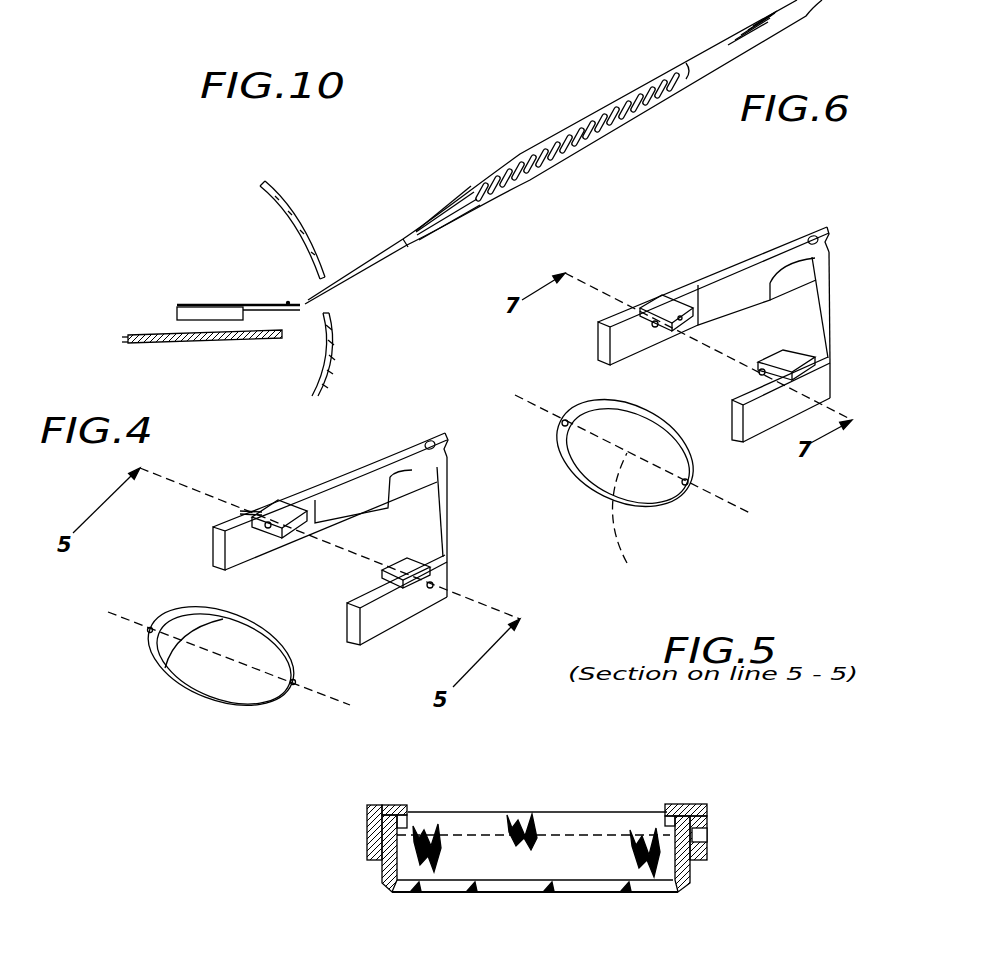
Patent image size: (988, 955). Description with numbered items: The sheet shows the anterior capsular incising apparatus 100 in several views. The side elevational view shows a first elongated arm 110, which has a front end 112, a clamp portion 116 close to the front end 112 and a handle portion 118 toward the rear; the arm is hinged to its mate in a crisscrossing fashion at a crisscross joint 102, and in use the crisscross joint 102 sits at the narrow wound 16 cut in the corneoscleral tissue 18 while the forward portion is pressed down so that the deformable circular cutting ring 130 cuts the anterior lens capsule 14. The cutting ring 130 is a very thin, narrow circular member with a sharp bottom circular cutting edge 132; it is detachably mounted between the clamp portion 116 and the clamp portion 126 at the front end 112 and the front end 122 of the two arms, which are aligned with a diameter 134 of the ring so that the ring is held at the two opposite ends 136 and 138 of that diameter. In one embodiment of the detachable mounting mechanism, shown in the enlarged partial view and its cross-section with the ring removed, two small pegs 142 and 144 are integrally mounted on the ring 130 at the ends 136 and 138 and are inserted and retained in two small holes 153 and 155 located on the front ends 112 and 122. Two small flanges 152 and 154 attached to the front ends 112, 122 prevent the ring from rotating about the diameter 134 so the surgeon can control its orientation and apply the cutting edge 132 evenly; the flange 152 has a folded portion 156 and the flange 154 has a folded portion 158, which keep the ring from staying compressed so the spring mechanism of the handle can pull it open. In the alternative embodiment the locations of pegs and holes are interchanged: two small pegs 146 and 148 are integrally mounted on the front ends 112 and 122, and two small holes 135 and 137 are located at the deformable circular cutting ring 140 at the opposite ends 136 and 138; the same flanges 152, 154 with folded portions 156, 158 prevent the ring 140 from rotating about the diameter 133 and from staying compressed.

In FIG. 10, the anterior lens capsule 14 is at (128, 342).
In FIG. 10, the narrow wound 16 is at (312, 277).
In FIG. 10, the corneoscleral tissue 18 is at (280, 196).
In FIG. 10, the anterior capsular incising apparatus 100 is at (426, 89).
In FIG. 10, the crisscross joint 102 is at (330, 347).
In FIG. 10, the first elongated arm 110 is at (498, 216).
In FIG. 6, the front end 112 is at (597, 338).
In FIG. 4, the front end 112 is at (230, 563).
In FIG. 5, the front end 112 is at (367, 857).
In FIG. 6, the clamp portion 116 is at (740, 263).
In FIG. 4, the clamp portion 116 is at (357, 468).
In FIG. 10, the handle portion 118 is at (711, 57).
In FIG. 6, the front end 122 is at (785, 424).
In FIG. 4, the front end 122 is at (373, 620).
In FIG. 5, the front end 122 is at (708, 855).
In FIG. 10, the clamp portion 126 is at (267, 309).
In FIG. 6, the clamp portion 126 is at (820, 280).
In FIG. 4, the clamp portion 126 is at (438, 483).
In FIG. 10, the deformable circular cutting ring 130 is at (177, 310).
In FIG. 4, the deformable circular cutting ring 130 is at (160, 702).
In FIG. 10, the sharp bottom circular cutting edge 132 is at (152, 320).
In FIG. 6, the sharp bottom circular cutting edge 132 is at (690, 462).
In FIG. 4, the sharp bottom circular cutting edge 132 is at (278, 693).
In FIG. 5, the sharp bottom circular cutting edge 132 is at (543, 892).
In FIG. 6, the diameter 133 is at (636, 520).
In FIG. 4, the diameter 134 is at (347, 548).
In FIG. 5, the diameter 134 is at (478, 832).
In FIG. 6, the small hole 135 is at (566, 427).
In FIG. 6, the opposite end of the diameter 136 is at (565, 419).
In FIG. 4, the opposite end of the diameter 136 is at (190, 625).
In FIG. 5, the opposite end of the diameter 136 is at (382, 862).
In FIG. 6, the small hole 137 is at (683, 480).
In FIG. 6, the opposite end of the diameter 138 is at (688, 485).
In FIG. 4, the opposite end of the diameter 138 is at (278, 676).
In FIG. 5, the opposite end of the diameter 138 is at (697, 862).
In FIG. 6, the deformable circular cutting ring 140 is at (752, 510).
In FIG. 4, the small peg 142 is at (148, 627).
In FIG. 5, the small peg 142 is at (370, 838).
In FIG. 10, the small peg 144 is at (202, 307).
In FIG. 4, the small peg 144 is at (297, 690).
In FIG. 5, the small peg 144 is at (707, 853).
In FIG. 6, the small peg 146 is at (656, 327).
In FIG. 6, the small peg 148 is at (759, 373).
In FIG. 6, the small flange 152 is at (660, 297).
In FIG. 4, the small flange 152 is at (277, 507).
In FIG. 5, the small flange 152 is at (392, 805).
In FIG. 4, the small hole 153 is at (247, 510).
In FIG. 5, the small hole 153 is at (373, 833).
In FIG. 10, the small flange 154 is at (203, 305).
In FIG. 6, the small flange 154 is at (790, 366).
In FIG. 4, the small flange 154 is at (397, 562).
In FIG. 5, the small flange 154 is at (685, 809).
In FIG. 4, the small hole 155 is at (432, 584).
In FIG. 5, the small hole 155 is at (706, 831).
In FIG. 6, the folded portion 156 is at (680, 316).
In FIG. 4, the folded portion 156 is at (293, 528).
In FIG. 5, the folded portion 156 is at (407, 808).
In FIG. 6, the folded portion 158 is at (753, 370).
In FIG. 4, the folded portion 158 is at (382, 580).
In FIG. 5, the folded portion 158 is at (667, 811).